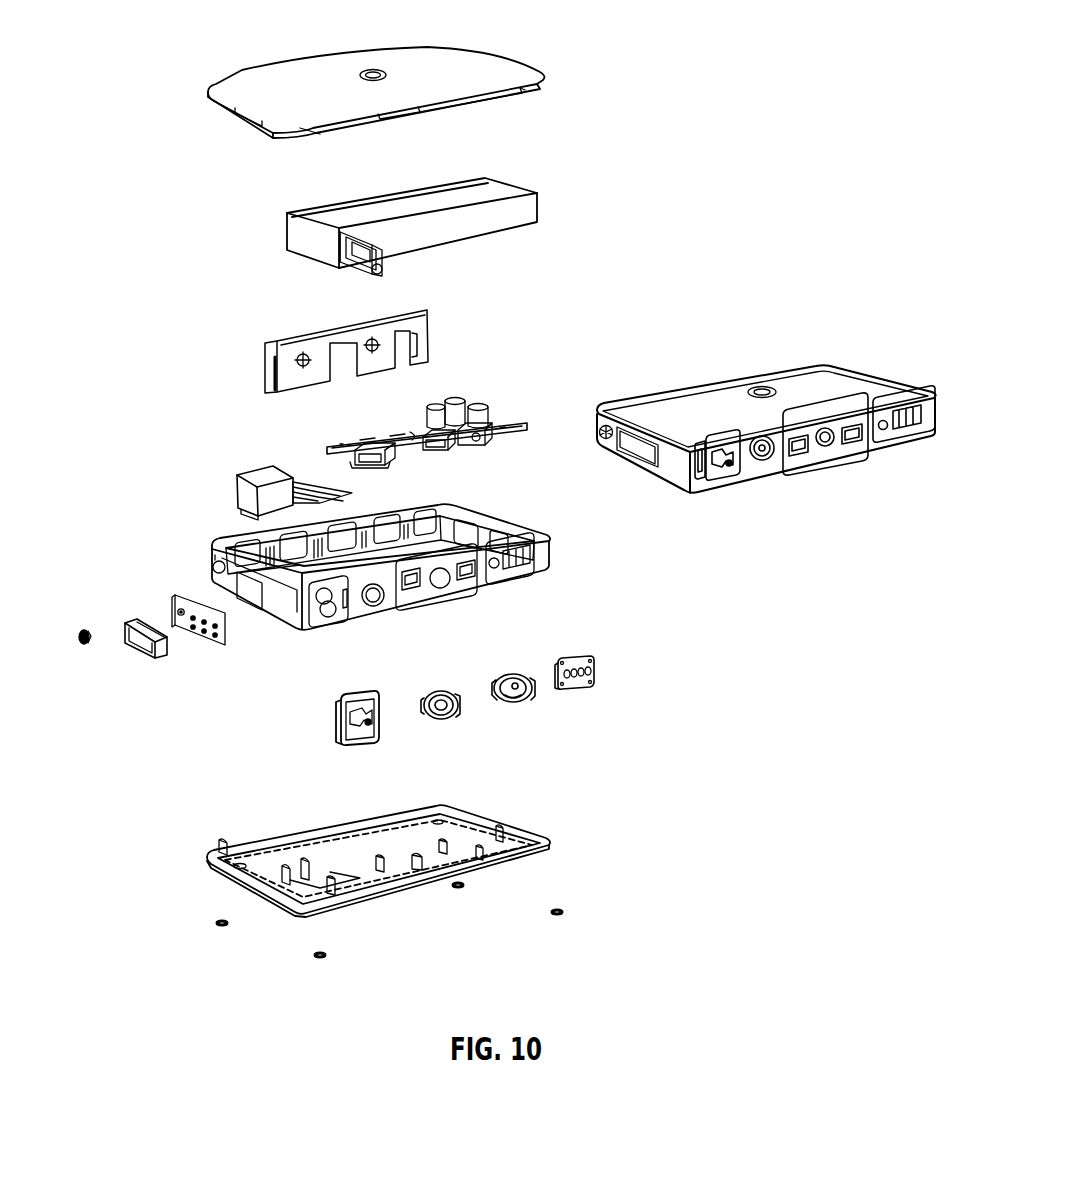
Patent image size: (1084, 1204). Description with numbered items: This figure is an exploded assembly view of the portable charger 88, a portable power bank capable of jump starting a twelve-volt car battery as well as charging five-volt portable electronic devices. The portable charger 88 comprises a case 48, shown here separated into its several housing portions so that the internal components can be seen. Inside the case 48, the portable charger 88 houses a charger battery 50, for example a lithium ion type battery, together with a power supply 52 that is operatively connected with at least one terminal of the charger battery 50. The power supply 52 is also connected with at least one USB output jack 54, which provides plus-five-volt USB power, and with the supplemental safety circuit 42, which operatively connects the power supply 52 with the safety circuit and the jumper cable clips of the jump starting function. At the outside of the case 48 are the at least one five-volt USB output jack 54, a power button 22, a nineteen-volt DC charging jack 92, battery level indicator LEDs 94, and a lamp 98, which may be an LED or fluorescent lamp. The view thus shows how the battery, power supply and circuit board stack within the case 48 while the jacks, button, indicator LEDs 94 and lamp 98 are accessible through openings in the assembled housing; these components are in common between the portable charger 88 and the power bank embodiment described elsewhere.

The portable charger 88 is at (833, 361).
The case 48 is at (246, 92).
The charger battery 50 is at (300, 232).
The supplemental safety circuit 42 is at (451, 435).
The 19 V DC charging jack 92 is at (478, 434).
The USB output jack 54 is at (386, 455).
The power supply 52 is at (250, 489).
The lamp 98 is at (139, 648).
The power button 22 is at (532, 692).
The battery level indicator LEDs 94 is at (596, 674).